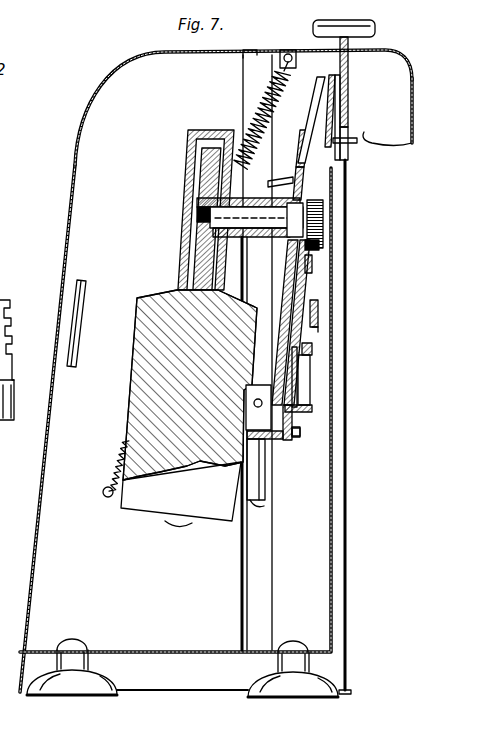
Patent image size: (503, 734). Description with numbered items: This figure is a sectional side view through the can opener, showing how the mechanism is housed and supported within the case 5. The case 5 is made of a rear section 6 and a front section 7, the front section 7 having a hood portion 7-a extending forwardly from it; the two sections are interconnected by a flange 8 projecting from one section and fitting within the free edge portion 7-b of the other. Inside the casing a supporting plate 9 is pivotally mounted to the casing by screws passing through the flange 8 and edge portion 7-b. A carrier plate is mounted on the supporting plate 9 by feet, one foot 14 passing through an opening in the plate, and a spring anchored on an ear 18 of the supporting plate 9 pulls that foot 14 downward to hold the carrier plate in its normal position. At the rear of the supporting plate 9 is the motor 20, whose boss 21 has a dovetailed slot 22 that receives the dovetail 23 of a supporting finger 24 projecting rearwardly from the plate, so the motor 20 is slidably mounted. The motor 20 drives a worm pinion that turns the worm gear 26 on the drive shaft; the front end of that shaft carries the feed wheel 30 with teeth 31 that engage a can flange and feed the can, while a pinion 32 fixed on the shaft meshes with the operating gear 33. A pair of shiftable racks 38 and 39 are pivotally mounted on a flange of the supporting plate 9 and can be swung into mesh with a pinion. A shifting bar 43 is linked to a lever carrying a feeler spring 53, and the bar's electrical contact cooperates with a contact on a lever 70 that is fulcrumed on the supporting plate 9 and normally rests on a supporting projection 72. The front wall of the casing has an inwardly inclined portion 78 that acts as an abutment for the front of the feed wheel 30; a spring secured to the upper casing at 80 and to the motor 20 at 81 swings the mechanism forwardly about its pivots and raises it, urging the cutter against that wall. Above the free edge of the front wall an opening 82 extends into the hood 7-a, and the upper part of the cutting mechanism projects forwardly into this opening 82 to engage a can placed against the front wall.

The case 5 is at (28, 577).
The rear section 6 is at (36, 517).
The front section 7 is at (393, 51).
The hood portion 7-a is at (414, 73).
The free edge portion 7-b is at (258, 50).
The flange 8 is at (256, 55).
The supporting plate 9 is at (301, 135).
The motor 20 is at (165, 511).
The boss 21 is at (265, 498).
The dovetailed slot 22 is at (264, 505).
The dovetail 23 is at (243, 470).
The supporting finger 24 is at (291, 445).
The worm gear 26 is at (199, 182).
The feed wheel 30 is at (326, 217).
The pinion 32 is at (286, 250).
The operating gear 33 is at (287, 283).
The shiftable rack 38 is at (313, 265).
The shiftable rack 39 is at (318, 329).
The spring 53 is at (335, 105).
The lever 70 is at (312, 357).
The supporting projection 72 is at (300, 433).
The front wall portion 78 is at (320, 312).
The spring anchorage 80 is at (296, 60).
The spring anchorage 81 is at (109, 498).
The opening 82 is at (346, 160).
The foot 14 is at (12, 178).
The ear 18 is at (0, 218).
The teeth 31 is at (8, 312).
The shifting bar 43 is at (0, 132).